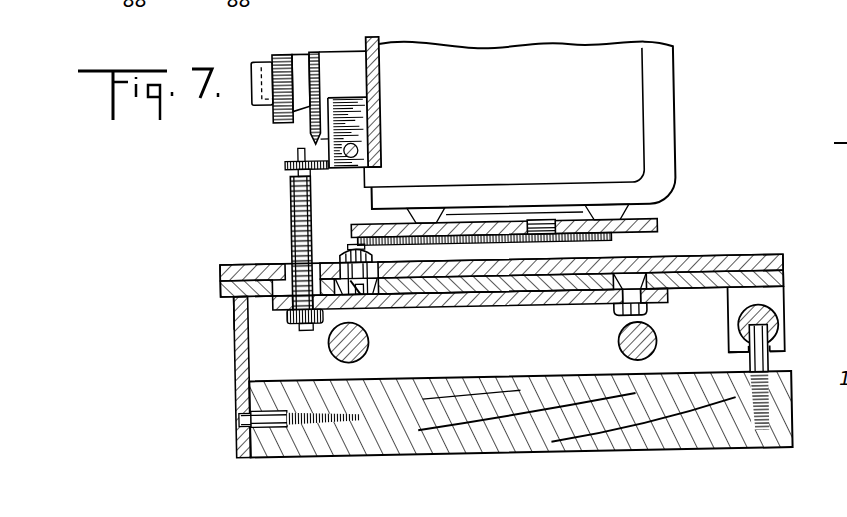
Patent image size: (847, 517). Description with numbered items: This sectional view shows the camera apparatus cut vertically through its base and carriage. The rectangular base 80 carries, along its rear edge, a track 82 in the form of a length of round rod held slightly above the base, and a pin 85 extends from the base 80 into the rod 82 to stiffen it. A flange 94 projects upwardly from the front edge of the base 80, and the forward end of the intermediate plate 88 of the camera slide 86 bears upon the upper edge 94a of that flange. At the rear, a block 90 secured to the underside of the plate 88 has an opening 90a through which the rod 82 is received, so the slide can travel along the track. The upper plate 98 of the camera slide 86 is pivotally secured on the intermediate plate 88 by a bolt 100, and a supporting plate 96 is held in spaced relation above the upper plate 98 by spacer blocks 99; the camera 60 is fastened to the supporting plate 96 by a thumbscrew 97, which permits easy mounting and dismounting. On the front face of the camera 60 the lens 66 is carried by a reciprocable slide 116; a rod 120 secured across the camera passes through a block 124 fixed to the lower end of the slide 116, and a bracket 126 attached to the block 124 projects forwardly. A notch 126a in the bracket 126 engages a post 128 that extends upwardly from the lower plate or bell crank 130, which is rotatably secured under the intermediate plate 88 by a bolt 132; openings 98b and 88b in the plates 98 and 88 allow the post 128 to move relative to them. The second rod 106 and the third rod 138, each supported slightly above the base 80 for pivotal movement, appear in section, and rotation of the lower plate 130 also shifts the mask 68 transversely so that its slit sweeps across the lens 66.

The camera 60 is at (684, 97).
The lens 66 is at (253, 99).
The mask 68 is at (256, 69).
The base 80 is at (846, 423).
The track 82 is at (771, 329).
The pin 85 is at (746, 372).
The camera slide 86 is at (709, 254).
The intermediate plate 88 is at (767, 287).
The opening 88b is at (272, 308).
The block 90 is at (773, 306).
The opening 90a is at (778, 356).
The flange 94 is at (241, 371).
The upper edge 94a is at (232, 314).
The supporting plate 96 is at (661, 225).
The thumbscrew 97 is at (549, 226).
The upper plate 98 is at (751, 267).
The opening 98b is at (285, 273).
The spacer block 99 is at (648, 250).
The bolt 100 is at (362, 286).
The second track 106 is at (366, 353).
The reciprocable slide 116 is at (369, 48).
The rod 120 is at (361, 153).
The block 124 is at (360, 126).
The bracket 126 is at (287, 166).
The notch 126a is at (337, 174).
The post 128 is at (293, 218).
The lower plate 130 is at (479, 302).
The bolt 132 is at (654, 304).
The third track 138 is at (623, 351).